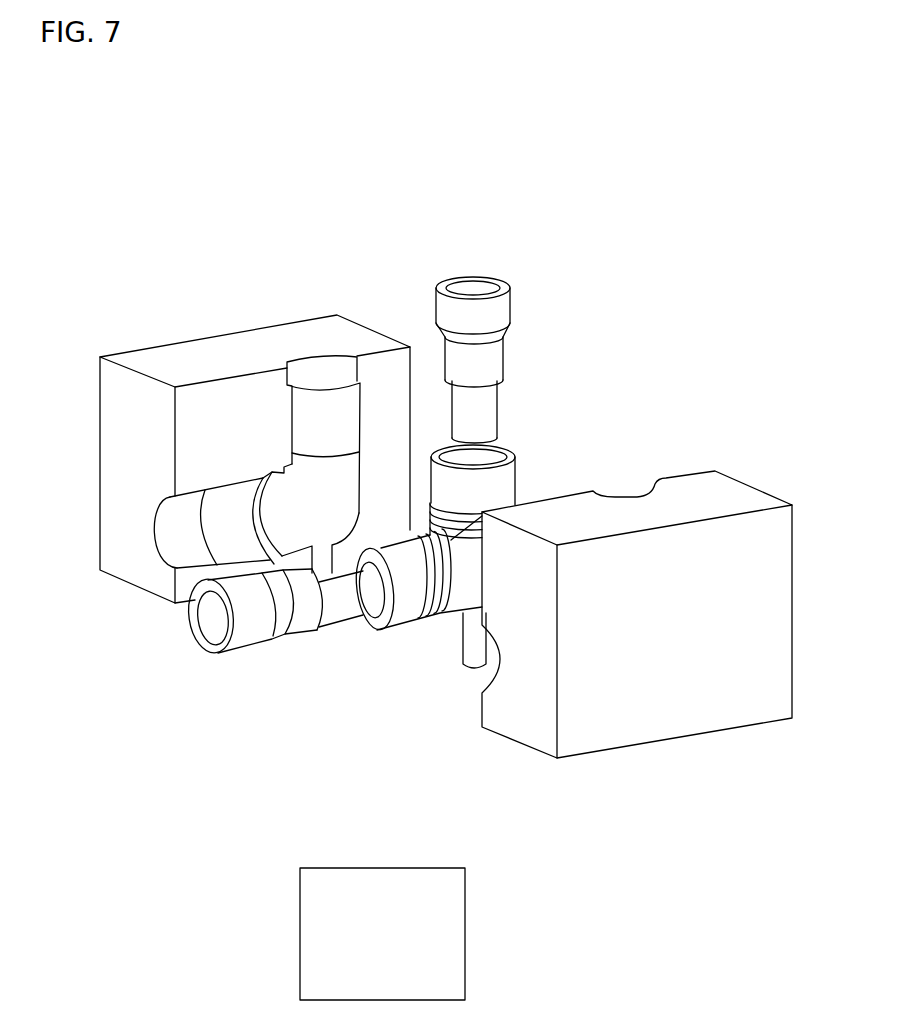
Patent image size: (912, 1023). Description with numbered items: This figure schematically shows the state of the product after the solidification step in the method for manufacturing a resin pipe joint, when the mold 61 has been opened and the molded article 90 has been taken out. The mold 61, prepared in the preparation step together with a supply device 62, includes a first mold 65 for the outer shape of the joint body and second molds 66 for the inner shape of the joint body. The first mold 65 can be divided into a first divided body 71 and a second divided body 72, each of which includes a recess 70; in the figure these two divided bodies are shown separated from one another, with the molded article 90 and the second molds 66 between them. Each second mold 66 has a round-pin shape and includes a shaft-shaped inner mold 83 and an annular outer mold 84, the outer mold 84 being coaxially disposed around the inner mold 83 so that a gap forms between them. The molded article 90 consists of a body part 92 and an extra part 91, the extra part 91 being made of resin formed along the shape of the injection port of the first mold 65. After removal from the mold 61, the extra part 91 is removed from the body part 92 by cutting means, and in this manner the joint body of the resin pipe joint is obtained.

The mold 61 is at (718, 807).
The supply device 62 is at (300, 932).
The first mold 65 is at (591, 762).
The second mold 66 is at (446, 279).
The recess 70 is at (313, 360).
The first divided body 71 is at (163, 345).
The second divided body 72 is at (714, 470).
The inner mold 83 is at (500, 413).
The outer mold 84 is at (511, 304).
The molded article 90 is at (383, 632).
The extra part 91 is at (473, 668).
The body part 92 is at (518, 477).